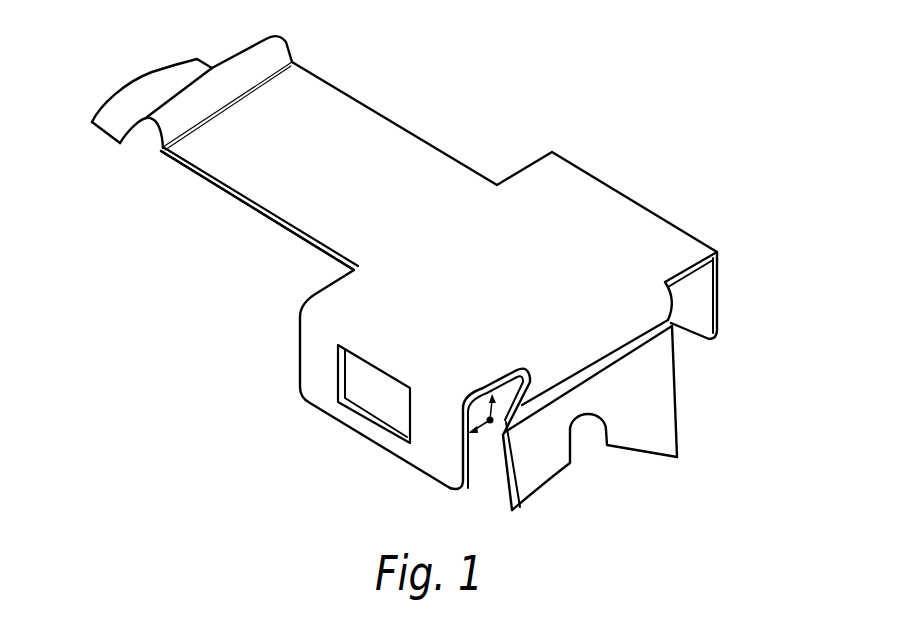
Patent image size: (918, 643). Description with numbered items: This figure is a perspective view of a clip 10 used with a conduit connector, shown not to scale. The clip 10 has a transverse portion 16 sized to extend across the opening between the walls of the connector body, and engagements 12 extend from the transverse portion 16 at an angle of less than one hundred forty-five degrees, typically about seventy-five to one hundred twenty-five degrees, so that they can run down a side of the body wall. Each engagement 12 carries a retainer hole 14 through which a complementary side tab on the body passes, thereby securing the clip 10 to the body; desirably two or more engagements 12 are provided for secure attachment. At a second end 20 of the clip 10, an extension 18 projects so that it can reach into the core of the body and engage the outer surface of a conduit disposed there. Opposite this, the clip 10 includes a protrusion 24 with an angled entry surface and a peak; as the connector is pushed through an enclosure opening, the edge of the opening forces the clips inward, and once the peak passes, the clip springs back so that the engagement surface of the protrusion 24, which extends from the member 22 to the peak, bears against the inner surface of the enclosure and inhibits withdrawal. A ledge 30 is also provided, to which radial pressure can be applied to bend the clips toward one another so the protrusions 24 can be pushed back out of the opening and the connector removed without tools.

The clip 10 is at (663, 187).
The engagement 12 is at (407, 452).
The retainer hole 14 is at (383, 405).
The transverse portion 16 is at (500, 290).
The extension 18 is at (647, 408).
The second end 20 is at (722, 282).
The member 22 is at (242, 197).
The protrusion 24 is at (290, 52).
The ledge 30 is at (143, 83).